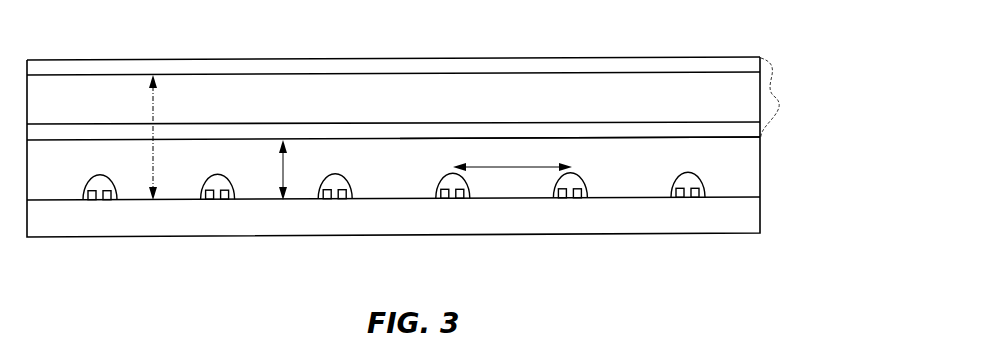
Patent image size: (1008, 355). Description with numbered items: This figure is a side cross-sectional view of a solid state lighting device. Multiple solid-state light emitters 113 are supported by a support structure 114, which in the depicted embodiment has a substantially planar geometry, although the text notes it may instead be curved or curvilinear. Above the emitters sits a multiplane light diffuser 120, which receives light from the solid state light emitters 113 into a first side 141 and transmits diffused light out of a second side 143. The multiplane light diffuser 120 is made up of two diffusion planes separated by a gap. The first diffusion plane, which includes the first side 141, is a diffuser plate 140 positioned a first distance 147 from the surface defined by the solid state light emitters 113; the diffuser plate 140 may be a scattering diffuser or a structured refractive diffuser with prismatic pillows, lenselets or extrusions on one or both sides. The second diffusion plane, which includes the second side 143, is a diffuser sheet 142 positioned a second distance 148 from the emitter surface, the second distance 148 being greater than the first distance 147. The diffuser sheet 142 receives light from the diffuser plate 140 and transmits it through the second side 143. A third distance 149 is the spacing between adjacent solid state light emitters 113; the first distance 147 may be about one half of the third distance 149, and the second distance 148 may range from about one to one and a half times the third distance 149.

The solid-state light emitters 113 is at (468, 183).
The support structure 114 is at (733, 217).
The multiplane light diffuser 120 is at (777, 95).
The diffuser plate 140 is at (748, 130).
The first side 141 is at (605, 140).
The diffuser sheet 142 is at (748, 63).
The second side 143 is at (425, 58).
The first distance 147 is at (283, 168).
The second distance 148 is at (153, 170).
The third distance 149 is at (515, 165).